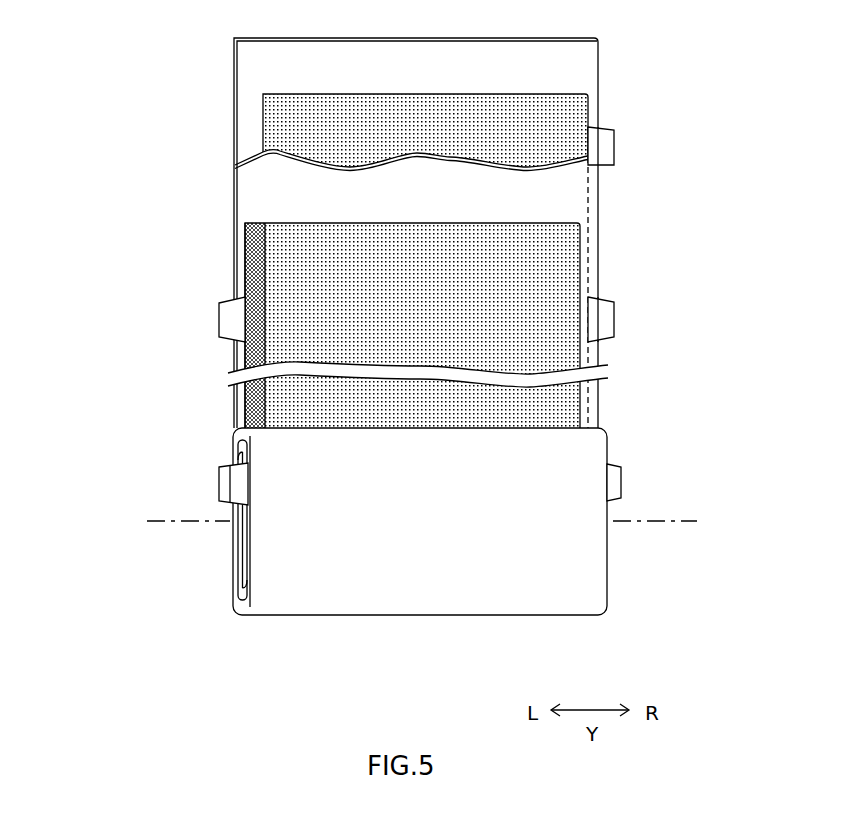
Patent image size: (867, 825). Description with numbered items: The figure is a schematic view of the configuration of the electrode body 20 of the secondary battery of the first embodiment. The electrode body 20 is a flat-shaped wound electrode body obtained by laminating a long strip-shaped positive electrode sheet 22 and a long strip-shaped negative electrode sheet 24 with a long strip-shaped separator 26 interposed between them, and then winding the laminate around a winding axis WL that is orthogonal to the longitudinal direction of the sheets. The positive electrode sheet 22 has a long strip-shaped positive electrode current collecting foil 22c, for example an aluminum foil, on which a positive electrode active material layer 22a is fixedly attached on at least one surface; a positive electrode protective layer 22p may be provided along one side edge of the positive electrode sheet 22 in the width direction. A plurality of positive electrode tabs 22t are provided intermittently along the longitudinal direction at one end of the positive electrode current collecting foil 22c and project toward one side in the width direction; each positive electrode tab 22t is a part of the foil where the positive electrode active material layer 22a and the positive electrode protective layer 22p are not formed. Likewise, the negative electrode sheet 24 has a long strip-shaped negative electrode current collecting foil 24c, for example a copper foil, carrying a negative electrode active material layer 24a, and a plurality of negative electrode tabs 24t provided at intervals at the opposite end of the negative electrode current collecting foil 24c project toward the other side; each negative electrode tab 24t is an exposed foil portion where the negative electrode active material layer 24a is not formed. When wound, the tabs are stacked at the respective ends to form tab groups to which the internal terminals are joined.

The electrode body 20 is at (478, 595).
The positive electrode sheet 22 is at (324, 324).
The positive electrode active material layer 22a is at (296, 286).
The positive electrode protective layer 22p is at (260, 241).
The positive electrode current collecting foil 22c is at (242, 356).
The positive electrode tab 22t is at (226, 322).
The negative electrode sheet 24 is at (513, 259).
The negative electrode active material layer 24a is at (570, 118).
The negative electrode current collecting foil 24c is at (588, 237).
The negative electrode tab 24t is at (612, 146).
The separator 26 is at (254, 57).
The winding axis WL is at (683, 519).